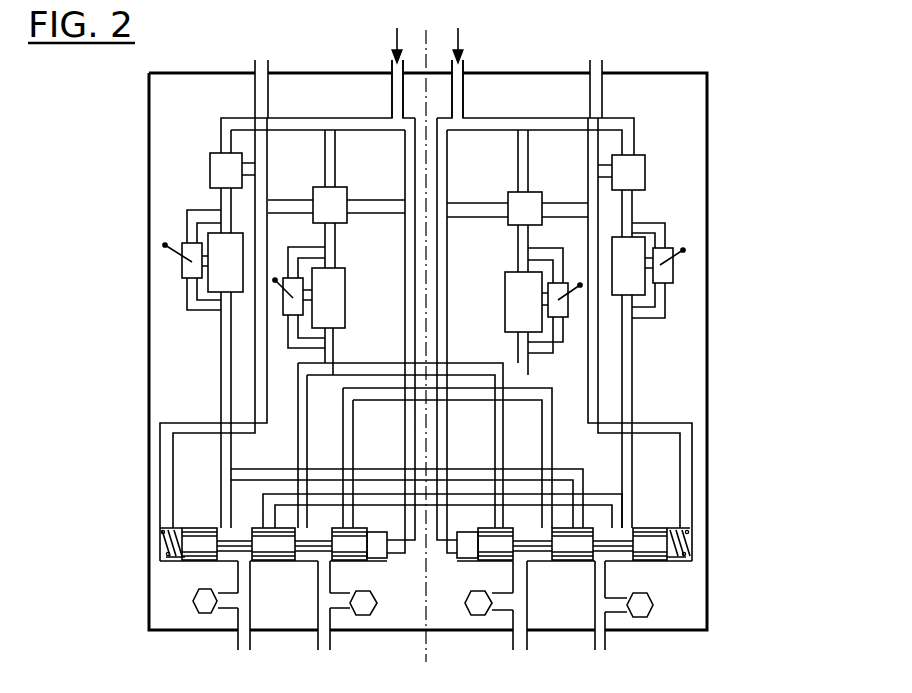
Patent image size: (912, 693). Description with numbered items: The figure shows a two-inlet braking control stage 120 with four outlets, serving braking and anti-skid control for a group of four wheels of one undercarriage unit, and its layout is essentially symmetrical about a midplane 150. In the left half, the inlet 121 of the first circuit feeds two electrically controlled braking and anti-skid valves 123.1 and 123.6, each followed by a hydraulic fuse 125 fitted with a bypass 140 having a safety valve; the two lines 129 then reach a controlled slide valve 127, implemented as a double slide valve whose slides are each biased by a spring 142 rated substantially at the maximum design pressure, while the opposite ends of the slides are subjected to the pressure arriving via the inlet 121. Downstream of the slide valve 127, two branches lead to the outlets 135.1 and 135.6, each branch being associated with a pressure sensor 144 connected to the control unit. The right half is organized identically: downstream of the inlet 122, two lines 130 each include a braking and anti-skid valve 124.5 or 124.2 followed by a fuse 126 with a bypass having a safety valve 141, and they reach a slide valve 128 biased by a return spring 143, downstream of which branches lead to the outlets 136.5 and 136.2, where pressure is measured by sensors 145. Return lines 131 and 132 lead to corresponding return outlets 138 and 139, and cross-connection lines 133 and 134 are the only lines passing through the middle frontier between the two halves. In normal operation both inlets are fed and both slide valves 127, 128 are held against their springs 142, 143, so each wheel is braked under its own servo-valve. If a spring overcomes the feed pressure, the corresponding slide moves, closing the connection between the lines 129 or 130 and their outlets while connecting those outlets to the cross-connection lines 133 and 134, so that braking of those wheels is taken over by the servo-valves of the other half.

The braking control stage 120 is at (750, 142).
The inlet 121 is at (392, 72).
The inlet 122 is at (462, 72).
The braking and anti-skid valve 123.1 is at (218, 163).
The braking and anti-skid valve 123.6 is at (340, 205).
The braking and anti-skid valve 124.2 is at (637, 173).
The braking and anti-skid valve 124.5 is at (518, 210).
The hydraulic fuse 125 is at (210, 246).
The fuse 126 is at (630, 245).
The slide valve 127 is at (192, 548).
The slide valve 128 is at (660, 548).
The line 129 is at (221, 340).
The line 130 is at (625, 335).
The return line 131 is at (405, 203).
The return line 132 is at (444, 147).
The cross-connection line 133 is at (383, 368).
The cross-connection line 134 is at (380, 393).
The outlet 135.1 is at (243, 638).
The outlet 135.6 is at (322, 635).
The outlet 136.2 is at (605, 640).
The outlet 136.5 is at (520, 640).
The outlet 138 is at (253, 63).
The outlet 139 is at (602, 62).
The bypass 140 is at (217, 243).
The safety valve 141 is at (660, 267).
The spring 142 is at (165, 532).
The return spring 143 is at (690, 530).
The pressure sensor 144 is at (203, 606).
The sensor 145 is at (480, 608).
The midplane 150 is at (434, 31).